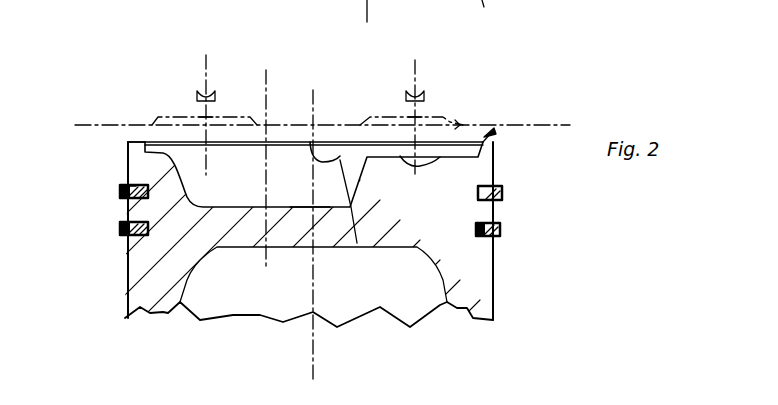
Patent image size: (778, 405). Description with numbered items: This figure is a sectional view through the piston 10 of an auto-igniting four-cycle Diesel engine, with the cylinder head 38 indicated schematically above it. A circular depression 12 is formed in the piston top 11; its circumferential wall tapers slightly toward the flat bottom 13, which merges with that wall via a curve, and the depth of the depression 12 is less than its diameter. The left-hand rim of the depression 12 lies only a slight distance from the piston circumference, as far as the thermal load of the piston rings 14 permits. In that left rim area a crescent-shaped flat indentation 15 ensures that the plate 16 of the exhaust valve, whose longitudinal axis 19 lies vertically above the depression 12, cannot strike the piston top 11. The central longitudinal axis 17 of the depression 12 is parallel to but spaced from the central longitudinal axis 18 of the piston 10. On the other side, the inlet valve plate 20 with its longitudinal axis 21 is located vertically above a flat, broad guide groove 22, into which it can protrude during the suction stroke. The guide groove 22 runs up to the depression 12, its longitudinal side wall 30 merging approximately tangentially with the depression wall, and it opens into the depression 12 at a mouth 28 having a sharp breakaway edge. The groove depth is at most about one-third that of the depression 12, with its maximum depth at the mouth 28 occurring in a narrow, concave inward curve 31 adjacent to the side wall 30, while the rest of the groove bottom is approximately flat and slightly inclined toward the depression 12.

The piston 10 is at (482, 283).
The piston top 11 is at (492, 130).
The circular depression 12 is at (247, 192).
The bottom 13 is at (316, 198).
The piston rings 14 is at (503, 227).
The crescent-shaped flat indentation 15 is at (153, 149).
The exhaust valve plate 16 is at (180, 117).
The central longitudinal axis of the depression 17 is at (268, 82).
The central longitudinal axis of the piston 18 is at (312, 345).
The longitudinal axis of the exhaust valve plate 19 is at (208, 70).
The inlet valve plate 20 is at (460, 112).
The longitudinal axis of the inlet valve plate 21 is at (421, 73).
The guide groove 22 is at (357, 135).
The mouth 28 is at (306, 173).
The longitudinal side wall 30 is at (470, 158).
The concave inward curve 31 is at (357, 243).
The cylinder head 38 is at (83, 127).